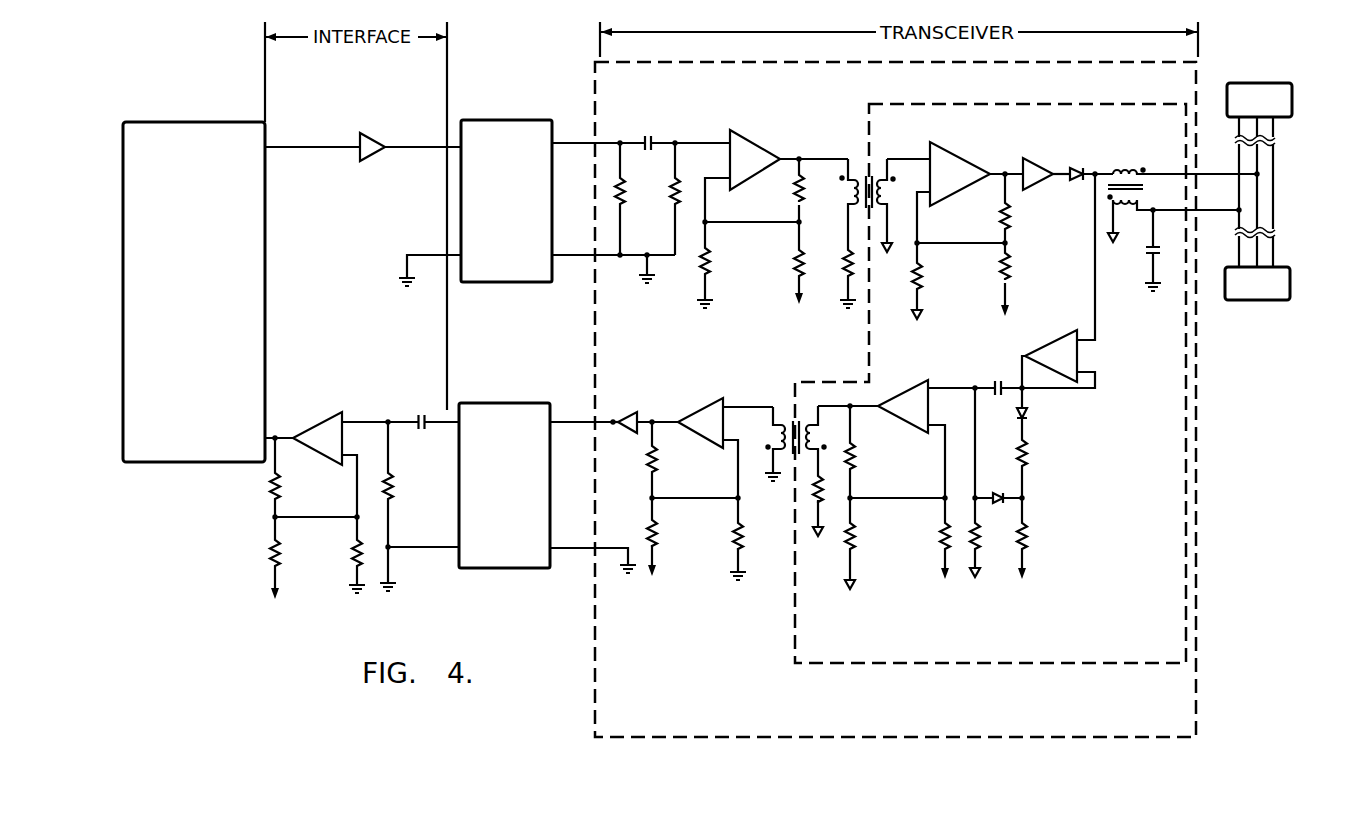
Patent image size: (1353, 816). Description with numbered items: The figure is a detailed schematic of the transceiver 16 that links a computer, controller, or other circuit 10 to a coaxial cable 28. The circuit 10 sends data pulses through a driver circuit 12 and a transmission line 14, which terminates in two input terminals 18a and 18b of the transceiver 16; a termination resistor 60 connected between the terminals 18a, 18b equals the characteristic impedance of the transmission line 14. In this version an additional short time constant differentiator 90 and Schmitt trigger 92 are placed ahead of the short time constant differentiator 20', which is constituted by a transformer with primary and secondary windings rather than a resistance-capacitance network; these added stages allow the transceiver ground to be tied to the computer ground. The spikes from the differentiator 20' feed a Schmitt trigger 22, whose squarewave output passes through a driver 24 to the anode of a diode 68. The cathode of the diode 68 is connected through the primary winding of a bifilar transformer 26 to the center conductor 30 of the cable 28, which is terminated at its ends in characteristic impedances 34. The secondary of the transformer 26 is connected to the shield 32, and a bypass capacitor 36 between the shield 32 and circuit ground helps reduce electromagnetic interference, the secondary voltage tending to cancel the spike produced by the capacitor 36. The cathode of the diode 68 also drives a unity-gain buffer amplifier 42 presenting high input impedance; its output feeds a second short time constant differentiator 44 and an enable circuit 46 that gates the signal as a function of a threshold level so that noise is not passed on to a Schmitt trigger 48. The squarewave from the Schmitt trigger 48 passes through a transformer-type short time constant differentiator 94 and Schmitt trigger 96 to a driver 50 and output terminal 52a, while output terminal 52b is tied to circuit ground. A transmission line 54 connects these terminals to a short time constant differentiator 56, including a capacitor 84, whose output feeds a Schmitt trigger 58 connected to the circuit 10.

The computer, controller, or other circuit 10 is at (233, 122).
The driver circuit 12 is at (375, 138).
The transmission line 14 is at (527, 120).
The transceiver 16 is at (1143, 62).
The input terminal 18a is at (563, 143).
The input terminal 18b is at (563, 255).
The short time constant differentiator 20' is at (878, 221).
The Schmitt trigger 22 is at (960, 162).
The driver 24 is at (1038, 160).
The bifilar transformer 26 is at (1128, 170).
The coaxial cable 28 is at (1275, 180).
The center conductor 30 is at (1258, 196).
The shield 32 is at (1276, 214).
The characteristic impedances 34 is at (1289, 83).
The bypass capacitor 36 is at (1146, 252).
The buffer amplifier 42 is at (1052, 340).
The short time constant differentiator 44 is at (993, 386).
The enable circuit 46 is at (1036, 431).
The Schmitt trigger 48 is at (897, 386).
The driver 50 is at (621, 410).
The output terminal 52a is at (558, 422).
The output terminal 52b is at (580, 548).
The transmission line 54 is at (518, 403).
The short time constant differentiator 56 is at (393, 406).
The Schmitt trigger 58 is at (320, 423).
The termination resistor 60 is at (626, 193).
The diode 68 is at (1076, 167).
The capacitor 84 is at (420, 418).
The short time constant differentiator 90 is at (657, 150).
The Schmitt trigger 92 is at (764, 141).
The short time constant differentiator 94 is at (782, 405).
The Schmitt trigger 96 is at (707, 400).